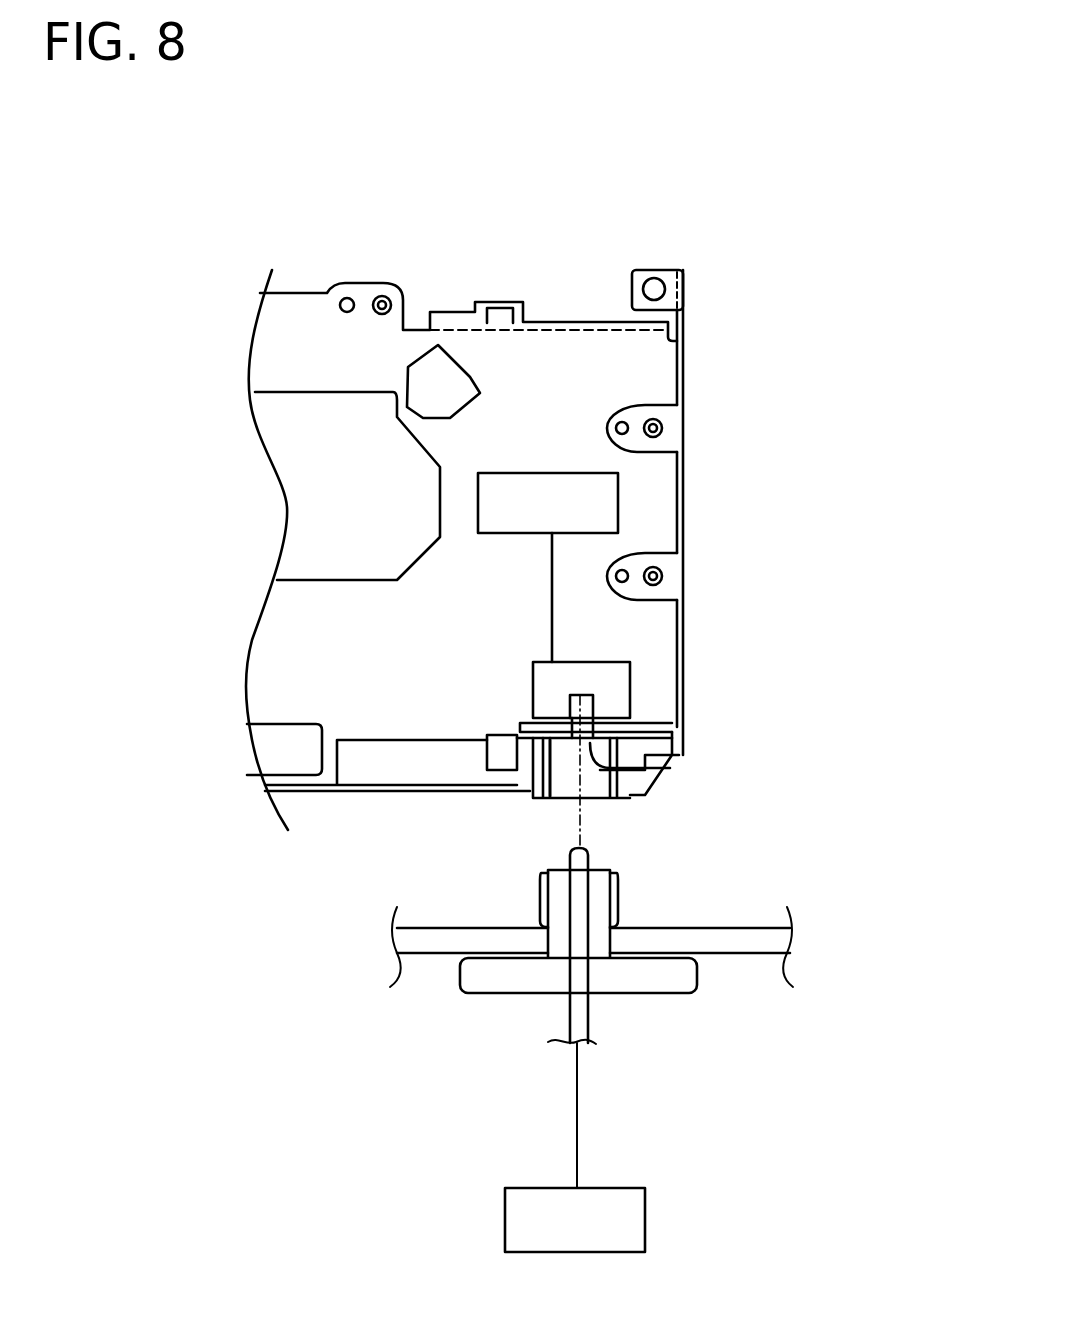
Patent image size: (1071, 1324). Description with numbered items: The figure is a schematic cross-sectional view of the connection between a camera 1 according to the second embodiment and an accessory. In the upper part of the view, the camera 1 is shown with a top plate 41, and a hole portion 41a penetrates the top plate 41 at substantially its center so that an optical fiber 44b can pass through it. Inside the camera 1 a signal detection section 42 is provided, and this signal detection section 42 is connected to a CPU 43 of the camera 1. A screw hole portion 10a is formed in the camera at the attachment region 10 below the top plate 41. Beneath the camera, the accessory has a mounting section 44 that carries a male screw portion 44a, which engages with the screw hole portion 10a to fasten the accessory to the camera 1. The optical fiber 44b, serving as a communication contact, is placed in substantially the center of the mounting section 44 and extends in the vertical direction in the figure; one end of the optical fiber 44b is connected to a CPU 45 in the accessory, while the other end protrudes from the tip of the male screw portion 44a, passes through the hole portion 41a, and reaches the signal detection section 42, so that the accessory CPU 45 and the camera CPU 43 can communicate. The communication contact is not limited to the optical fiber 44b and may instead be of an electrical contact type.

The camera 1 is at (738, 367).
The engaging portion 10 is at (517, 790).
The screw hole portion 10a is at (560, 797).
The top plate 41 is at (527, 723).
The hole portion 41a is at (667, 765).
The signal detection section 42 is at (617, 683).
The CPU 43 is at (597, 498).
The mounting section 44 is at (650, 987).
The male screw portion 44a is at (618, 892).
The optical fiber 44b is at (585, 843).
The CPU 45 is at (605, 1220).